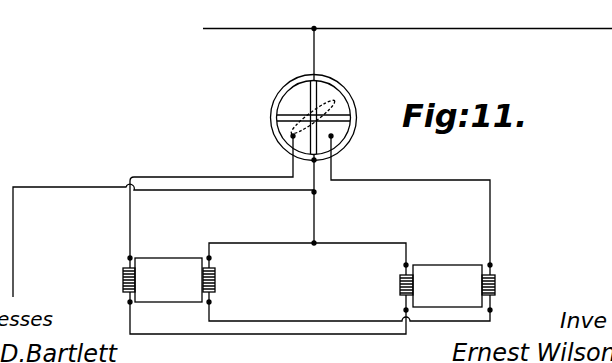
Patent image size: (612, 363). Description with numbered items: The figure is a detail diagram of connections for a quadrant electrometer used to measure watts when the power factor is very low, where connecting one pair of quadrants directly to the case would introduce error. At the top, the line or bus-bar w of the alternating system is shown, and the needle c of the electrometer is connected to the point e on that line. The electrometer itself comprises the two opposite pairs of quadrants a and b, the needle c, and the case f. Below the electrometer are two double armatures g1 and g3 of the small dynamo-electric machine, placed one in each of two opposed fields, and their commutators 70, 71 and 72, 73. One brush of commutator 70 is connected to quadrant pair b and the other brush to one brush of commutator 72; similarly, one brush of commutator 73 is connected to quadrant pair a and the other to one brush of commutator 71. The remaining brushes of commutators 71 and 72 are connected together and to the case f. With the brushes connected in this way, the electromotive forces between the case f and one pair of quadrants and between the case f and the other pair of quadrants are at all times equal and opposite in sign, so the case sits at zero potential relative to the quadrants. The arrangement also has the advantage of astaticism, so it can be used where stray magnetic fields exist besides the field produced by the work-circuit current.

The line or bus-bar w is at (256, 28).
The point in the work-circuit e is at (318, 27).
The quadrant pair a is at (345, 127).
The quadrant pair b is at (278, 126).
The needle c is at (350, 100).
The case f is at (316, 166).
The commutator 70 is at (135, 278).
The armature g1 is at (168, 281).
The commutator 71 is at (215, 278).
The commutator 72 is at (413, 286).
The armature g3 is at (447, 288).
The commutator 73 is at (495, 287).